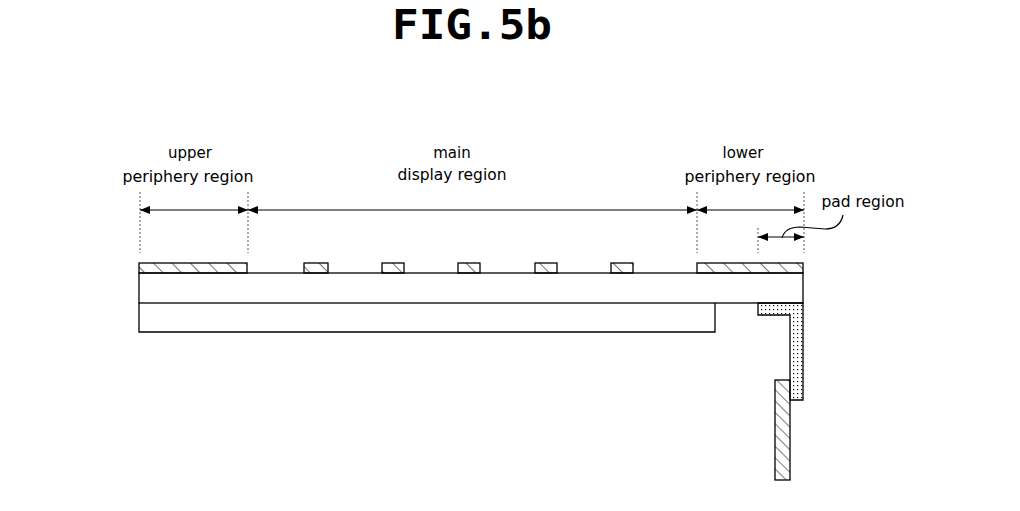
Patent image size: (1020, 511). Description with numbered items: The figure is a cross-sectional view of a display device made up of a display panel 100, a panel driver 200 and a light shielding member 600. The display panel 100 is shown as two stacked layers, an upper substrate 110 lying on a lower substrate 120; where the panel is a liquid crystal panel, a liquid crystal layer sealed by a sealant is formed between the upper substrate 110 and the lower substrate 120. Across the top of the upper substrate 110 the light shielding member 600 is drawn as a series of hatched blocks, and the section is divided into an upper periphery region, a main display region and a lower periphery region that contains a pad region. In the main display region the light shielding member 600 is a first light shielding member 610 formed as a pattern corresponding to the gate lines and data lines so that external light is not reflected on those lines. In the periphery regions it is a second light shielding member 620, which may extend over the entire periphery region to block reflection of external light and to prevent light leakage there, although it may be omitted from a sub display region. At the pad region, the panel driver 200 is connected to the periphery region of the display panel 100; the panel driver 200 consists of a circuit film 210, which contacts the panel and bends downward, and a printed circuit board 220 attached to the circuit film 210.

The display panel 100 is at (65, 285).
The upper substrate 110 is at (139, 291).
The lower substrate 120 is at (139, 321).
The light shielding member 600 is at (315, 388).
The first light shielding member 610 is at (313, 273).
The second light shielding member 620 is at (197, 273).
The panel driver 200 is at (883, 353).
The circuit film 210 is at (803, 352).
The printed circuit board 220 is at (790, 427).